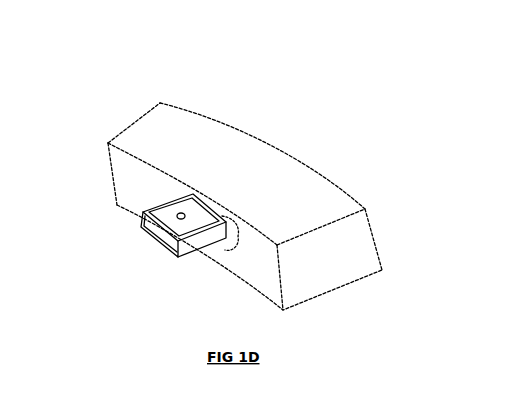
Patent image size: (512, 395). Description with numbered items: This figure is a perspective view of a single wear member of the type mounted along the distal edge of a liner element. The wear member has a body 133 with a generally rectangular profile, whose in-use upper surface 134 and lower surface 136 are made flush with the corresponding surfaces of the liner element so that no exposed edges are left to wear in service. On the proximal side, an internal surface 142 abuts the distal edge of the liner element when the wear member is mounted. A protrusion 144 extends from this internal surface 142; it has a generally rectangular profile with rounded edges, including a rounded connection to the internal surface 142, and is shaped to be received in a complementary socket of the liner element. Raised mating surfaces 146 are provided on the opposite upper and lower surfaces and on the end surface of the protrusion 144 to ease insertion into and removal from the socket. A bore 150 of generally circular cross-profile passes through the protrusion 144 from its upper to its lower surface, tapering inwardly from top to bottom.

The body 133 is at (317, 202).
The upper surface 134 is at (260, 172).
The lower surface 136 is at (340, 290).
The internal surface 142 is at (142, 183).
The protrusion 144 is at (178, 252).
The raised mating surface 146 is at (174, 207).
The bore 150 is at (182, 213).